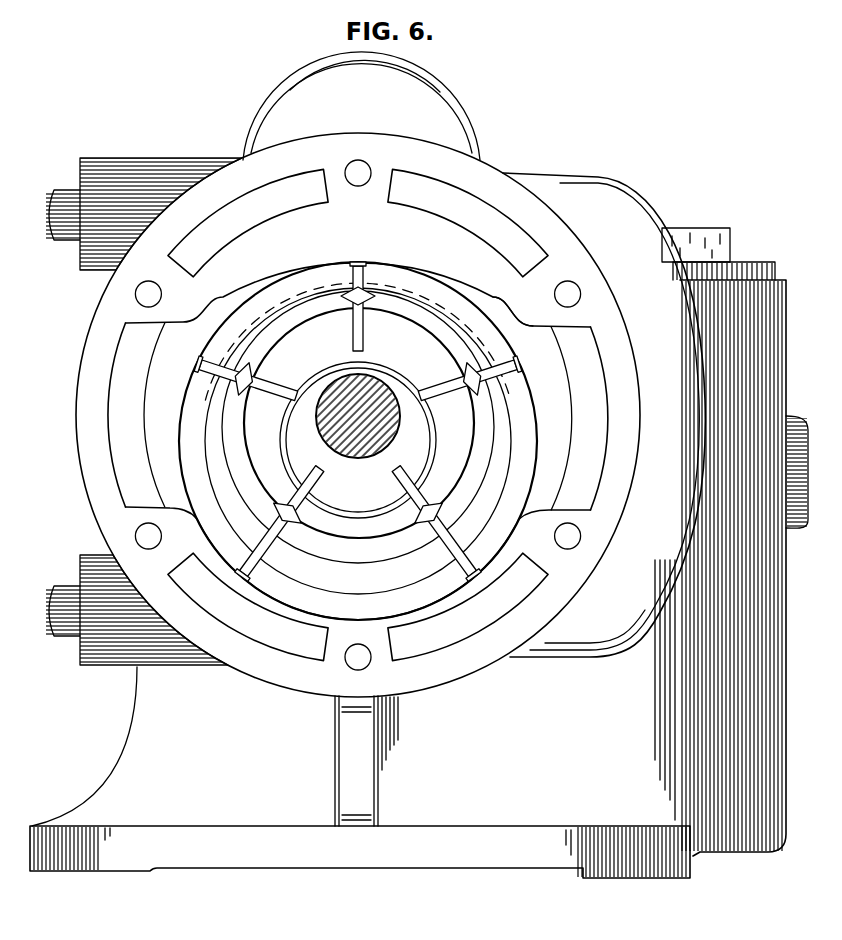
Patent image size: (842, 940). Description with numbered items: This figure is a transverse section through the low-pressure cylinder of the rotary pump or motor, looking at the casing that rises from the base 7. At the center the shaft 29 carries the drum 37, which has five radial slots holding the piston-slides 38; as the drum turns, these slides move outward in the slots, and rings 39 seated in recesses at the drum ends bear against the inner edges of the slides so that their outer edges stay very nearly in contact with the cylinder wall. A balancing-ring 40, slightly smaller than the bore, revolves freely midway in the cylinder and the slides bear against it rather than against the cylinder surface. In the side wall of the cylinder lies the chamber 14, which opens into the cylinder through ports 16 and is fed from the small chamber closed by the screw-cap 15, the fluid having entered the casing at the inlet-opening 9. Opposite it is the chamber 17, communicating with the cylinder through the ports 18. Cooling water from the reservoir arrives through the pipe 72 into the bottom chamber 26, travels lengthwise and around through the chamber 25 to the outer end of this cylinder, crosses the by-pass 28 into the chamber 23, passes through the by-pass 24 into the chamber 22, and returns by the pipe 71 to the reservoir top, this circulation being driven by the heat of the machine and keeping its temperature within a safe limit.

The base 7 is at (357, 860).
The inlet-opening 9 is at (808, 432).
The chamber 14 is at (579, 418).
The screw-cap 15 is at (733, 246).
The ports 16 is at (524, 336).
The chamber 17 is at (136, 415).
The ports 18 is at (358, 441).
The chamber 22 is at (248, 222).
The chamber 23 is at (468, 222).
The by-pass 24 is at (361, 106).
The chamber 25 is at (468, 606).
The chamber 26 is at (254, 600).
The by-pass 28 is at (644, 514).
The shaft 29 is at (358, 416).
The drum 37 is at (275, 337).
The piston-slides 38 is at (358, 421).
The rings 39 is at (358, 440).
The balancing-ring 40 is at (358, 441).
The pipe 71 is at (147, 214).
The pipe 72 is at (142, 610).